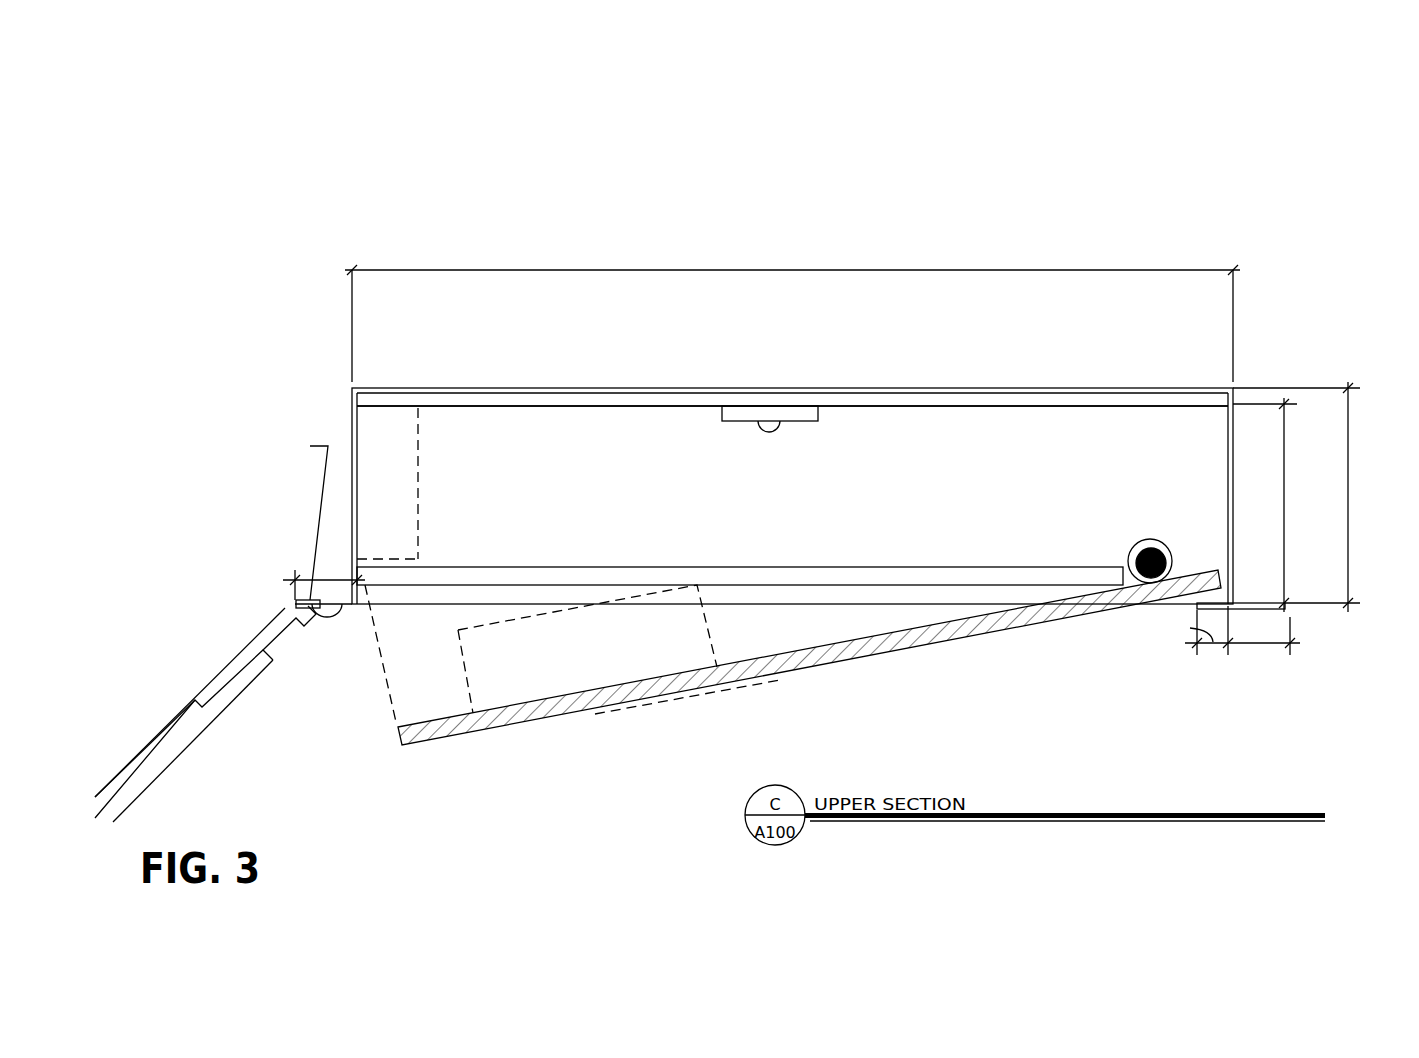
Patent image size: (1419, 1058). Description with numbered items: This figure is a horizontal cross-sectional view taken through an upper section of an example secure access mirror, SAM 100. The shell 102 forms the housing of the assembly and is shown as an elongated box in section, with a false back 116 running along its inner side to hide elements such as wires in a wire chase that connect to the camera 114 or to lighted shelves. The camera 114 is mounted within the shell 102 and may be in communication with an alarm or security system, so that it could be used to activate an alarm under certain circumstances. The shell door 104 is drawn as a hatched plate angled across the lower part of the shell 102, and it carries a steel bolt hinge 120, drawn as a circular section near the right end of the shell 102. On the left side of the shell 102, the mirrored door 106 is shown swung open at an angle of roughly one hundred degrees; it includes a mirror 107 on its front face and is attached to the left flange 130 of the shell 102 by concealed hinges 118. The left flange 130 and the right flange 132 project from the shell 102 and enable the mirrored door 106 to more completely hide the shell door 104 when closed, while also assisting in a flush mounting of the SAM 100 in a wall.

The secure access mirror 100 is at (888, 113).
The shell 102 is at (503, 386).
The shell door 104 is at (884, 656).
The mirrored door 106 is at (216, 724).
The mirror 107 is at (134, 752).
The camera 114 is at (735, 407).
The false back 116 is at (990, 400).
The concealed hinges 118 is at (294, 605).
The steel bolt hinge 120 is at (1136, 540).
The left flange 130 is at (333, 597).
The right flange 132 is at (1271, 600).